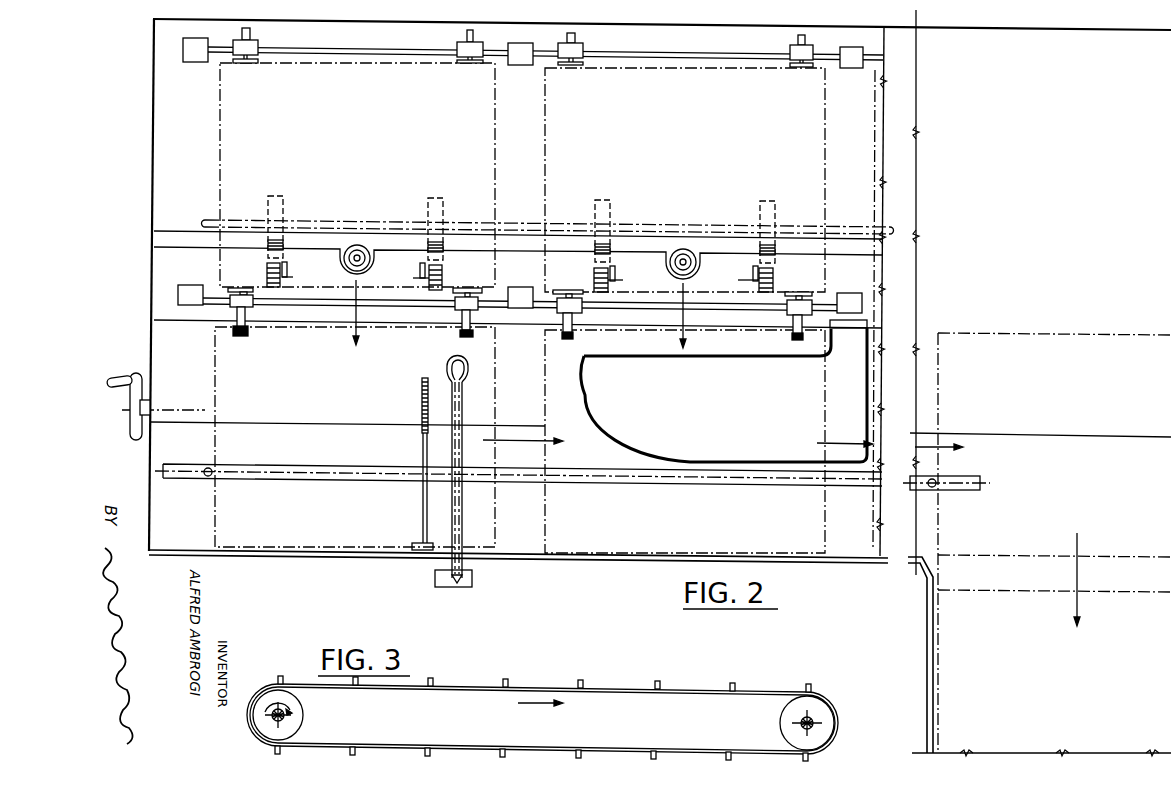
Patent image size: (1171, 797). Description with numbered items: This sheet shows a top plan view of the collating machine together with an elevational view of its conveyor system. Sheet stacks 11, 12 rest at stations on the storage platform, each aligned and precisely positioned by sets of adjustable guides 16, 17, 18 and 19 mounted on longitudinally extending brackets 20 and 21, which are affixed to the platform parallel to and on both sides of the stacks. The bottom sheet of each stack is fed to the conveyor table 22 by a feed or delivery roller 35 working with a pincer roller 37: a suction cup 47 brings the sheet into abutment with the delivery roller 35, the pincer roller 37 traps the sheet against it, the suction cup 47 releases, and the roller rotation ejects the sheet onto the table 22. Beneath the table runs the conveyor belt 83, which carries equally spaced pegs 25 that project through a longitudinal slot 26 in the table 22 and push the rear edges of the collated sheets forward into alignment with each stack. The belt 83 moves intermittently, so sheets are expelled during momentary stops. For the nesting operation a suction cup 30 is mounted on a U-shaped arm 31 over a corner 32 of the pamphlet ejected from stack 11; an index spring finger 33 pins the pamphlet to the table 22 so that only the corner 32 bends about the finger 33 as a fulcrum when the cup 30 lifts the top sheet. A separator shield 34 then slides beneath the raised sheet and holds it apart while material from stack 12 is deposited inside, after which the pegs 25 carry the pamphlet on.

In FIG. 2, the sheet stack 11 is at (483, 150).
In FIG. 2, the sheet stack 12 is at (810, 142).
In FIG. 2, the adjustable guide 16 is at (256, 45).
In FIG. 2, the adjustable guide 17 is at (473, 48).
In FIG. 2, the adjustable guide 18 is at (229, 302).
In FIG. 2, the adjustable guide 19 is at (456, 304).
In FIG. 2, the longitudinally extending bracket 20 is at (367, 50).
In FIG. 2, the longitudinally extending bracket 21 is at (331, 299).
In FIG. 2, the conveyor table 22 is at (527, 546).
In FIG. 3, the peg 25 is at (733, 682).
In FIG. 2, the longitudinal slot 26 is at (295, 468).
In FIG. 2, the suction cup 30 is at (452, 359).
In FIG. 2, the U-shaped arm 31 is at (461, 525).
In FIG. 2, the corner 32 is at (481, 353).
In FIG. 2, the index spring finger 33 is at (422, 397).
In FIG. 2, the separator shield 34 is at (638, 441).
In FIG. 2, the feed roller 35 is at (284, 259).
In FIG. 2, the pincer roller 37 is at (266, 273).
In FIG. 2, the suction cup 47 is at (370, 261).
In FIG. 3, the conveyor belt 83 is at (523, 690).